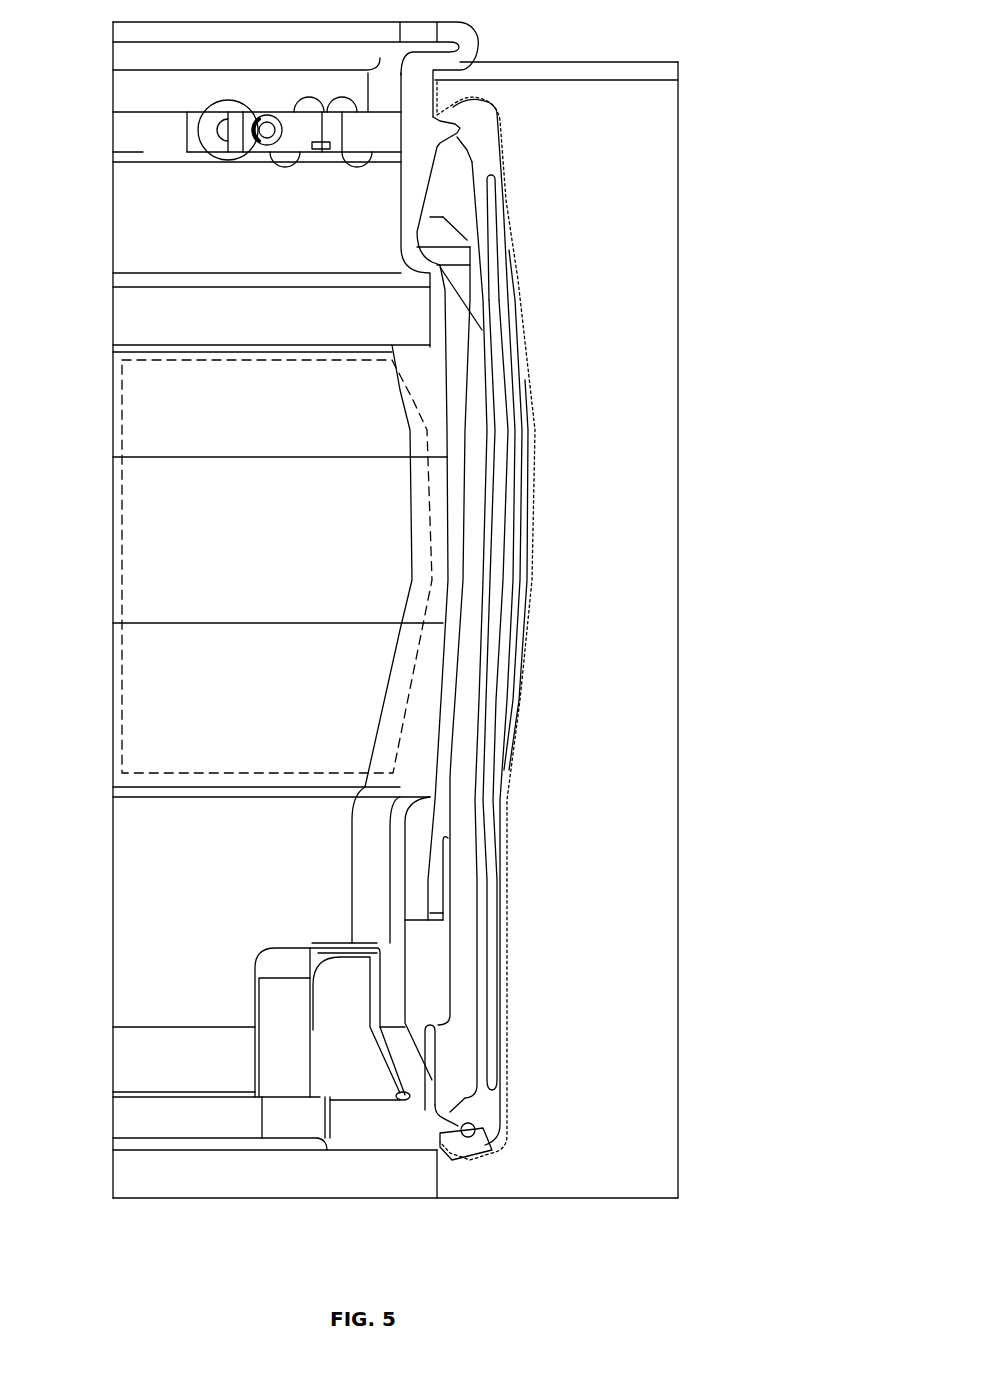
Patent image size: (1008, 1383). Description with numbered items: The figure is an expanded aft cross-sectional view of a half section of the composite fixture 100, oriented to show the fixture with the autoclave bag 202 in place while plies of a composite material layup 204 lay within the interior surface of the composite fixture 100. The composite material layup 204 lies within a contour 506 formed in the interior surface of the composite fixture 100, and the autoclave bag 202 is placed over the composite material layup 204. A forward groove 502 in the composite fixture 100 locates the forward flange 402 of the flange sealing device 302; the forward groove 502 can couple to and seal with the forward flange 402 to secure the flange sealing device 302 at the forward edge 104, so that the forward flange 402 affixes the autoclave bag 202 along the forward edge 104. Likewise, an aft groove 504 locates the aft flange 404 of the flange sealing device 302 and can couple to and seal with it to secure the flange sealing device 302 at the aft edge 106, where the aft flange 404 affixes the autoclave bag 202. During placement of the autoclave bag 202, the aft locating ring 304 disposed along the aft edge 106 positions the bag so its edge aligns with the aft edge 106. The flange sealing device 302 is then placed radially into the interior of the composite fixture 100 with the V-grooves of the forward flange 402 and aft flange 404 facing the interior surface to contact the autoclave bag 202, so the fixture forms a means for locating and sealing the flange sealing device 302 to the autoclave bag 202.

The composite fixture 100 is at (395, 610).
The forward edge 104 is at (182, 1172).
The aft edge 106 is at (657, 58).
The autoclave bag 202 is at (280, 626).
The composite material layup 204 is at (122, 694).
The flange sealing device 302 is at (530, 512).
The aft locating ring 304 is at (592, 75).
The forward flange 402 is at (483, 1140).
The aft flange 404 is at (468, 118).
The forward groove 502 is at (436, 1140).
The aft groove 504 is at (437, 136).
The contour 506 is at (355, 435).